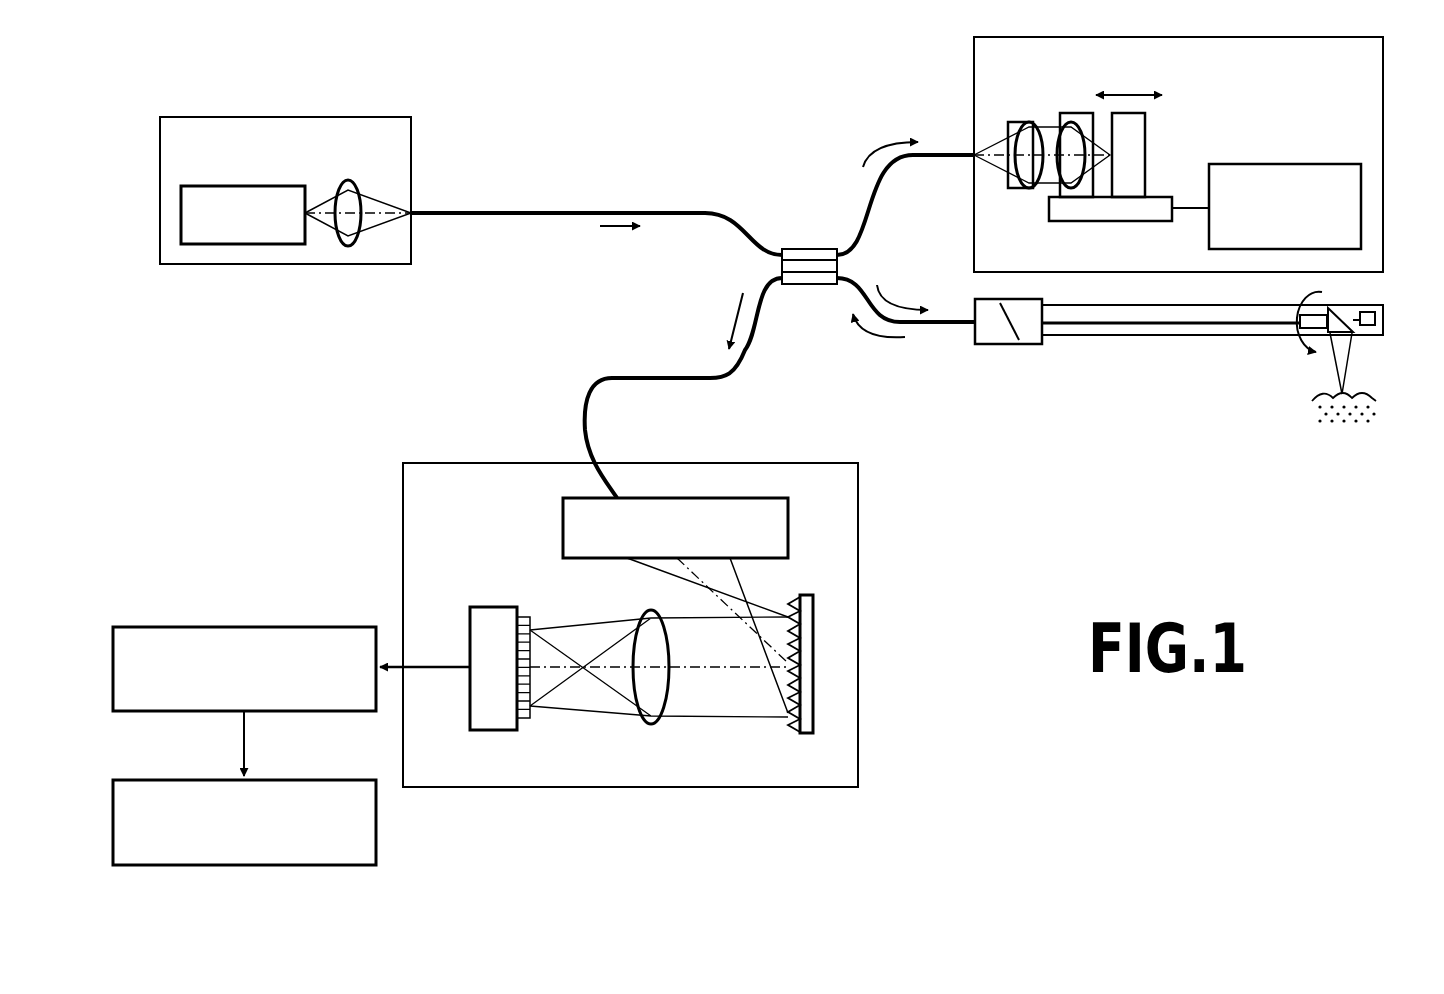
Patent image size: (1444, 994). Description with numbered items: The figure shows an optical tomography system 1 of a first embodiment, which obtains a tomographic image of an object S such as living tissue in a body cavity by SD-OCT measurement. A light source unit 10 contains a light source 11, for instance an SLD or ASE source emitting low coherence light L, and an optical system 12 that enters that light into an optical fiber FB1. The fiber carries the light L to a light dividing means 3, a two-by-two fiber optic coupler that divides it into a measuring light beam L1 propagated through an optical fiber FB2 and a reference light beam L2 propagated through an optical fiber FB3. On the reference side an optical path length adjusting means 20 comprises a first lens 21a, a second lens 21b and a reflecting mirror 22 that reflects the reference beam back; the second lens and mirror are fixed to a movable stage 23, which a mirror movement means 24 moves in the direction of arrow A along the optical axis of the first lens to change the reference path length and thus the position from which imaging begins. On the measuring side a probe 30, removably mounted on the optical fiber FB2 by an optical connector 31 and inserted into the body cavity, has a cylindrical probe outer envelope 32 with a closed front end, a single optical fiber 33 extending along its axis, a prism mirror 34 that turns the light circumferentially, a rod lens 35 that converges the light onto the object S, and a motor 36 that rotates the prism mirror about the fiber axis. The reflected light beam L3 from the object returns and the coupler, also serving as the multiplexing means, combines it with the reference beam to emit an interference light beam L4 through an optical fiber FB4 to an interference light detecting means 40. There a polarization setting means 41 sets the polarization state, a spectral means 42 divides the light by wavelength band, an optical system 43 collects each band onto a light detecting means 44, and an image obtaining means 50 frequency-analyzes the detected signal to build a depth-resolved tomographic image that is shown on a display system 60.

The optical tomography system 1 is at (813, 55).
The light source unit 10 is at (378, 117).
The light source 11 is at (205, 186).
The optical system 12 is at (349, 181).
The optical fiber FB1 is at (548, 213).
The optical fiber FB2 is at (958, 312).
The optical fiber FB3 is at (950, 154).
The optical fiber FB4 is at (653, 378).
The light L is at (620, 242).
The measuring light beam L1 is at (902, 299).
The reference light beam L2 is at (886, 146).
The reflected light beam L3 is at (874, 340).
The interference light beam L4 is at (721, 321).
The light dividing means 3 is at (813, 285).
The optical path length adjusting means 20 is at (1383, 68).
The first lens 21a is at (1042, 102).
The second lens 21b is at (1070, 116).
The reflecting mirror 22 is at (1140, 137).
The movable stage 23 is at (1148, 218).
The mirror movement means 24 is at (1338, 164).
The arrow A is at (1132, 93).
The probe 30 is at (1180, 351).
The optical connector 31 is at (994, 344).
The probe outer envelope 32 is at (1072, 336).
The optical fiber 33 is at (1112, 326).
The prism mirror 34 is at (1334, 306).
The rod lens 35 is at (1306, 329).
The motor 36 is at (1383, 323).
The object S is at (1362, 398).
The interference light detecting means 40 is at (858, 525).
The polarization setting means 41 is at (788, 527).
The spectral means 42 is at (803, 595).
The optical system 43 is at (648, 724).
The light detecting means 44 is at (498, 607).
The image obtaining means 50 is at (134, 627).
The display system 60 is at (134, 780).